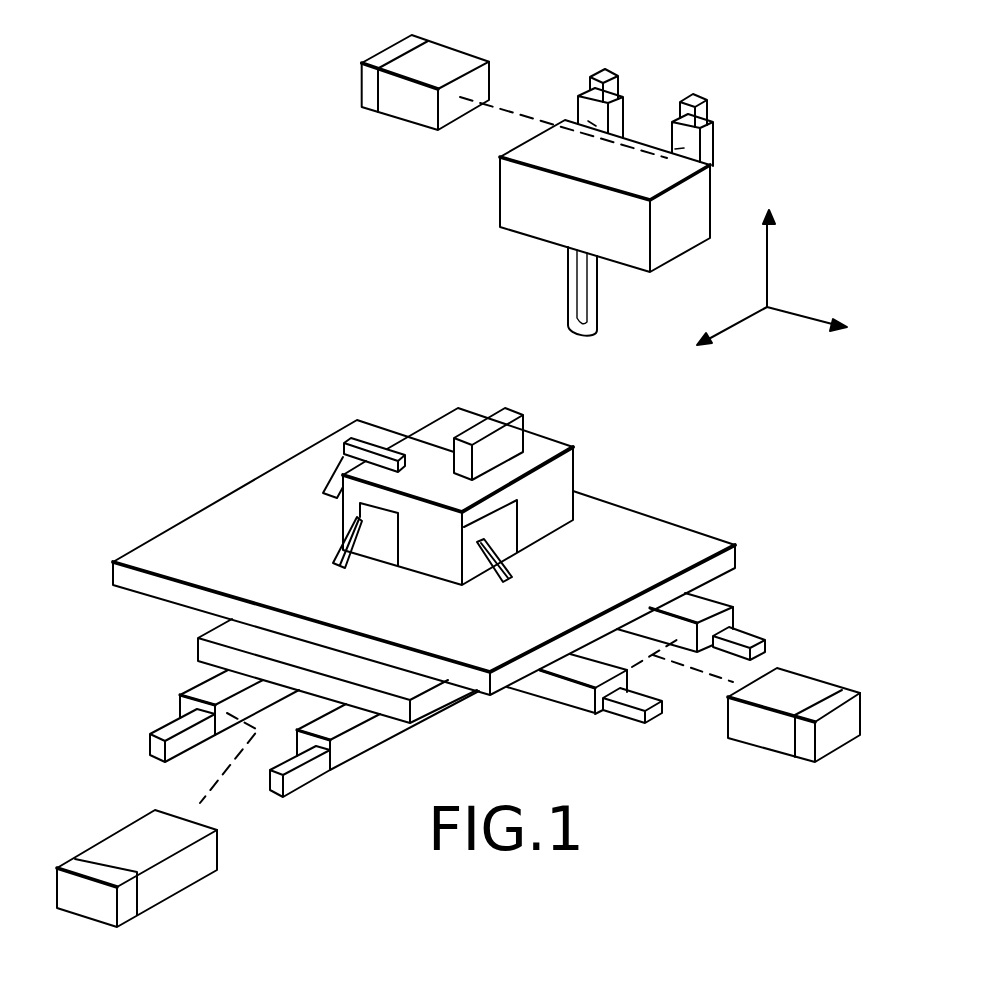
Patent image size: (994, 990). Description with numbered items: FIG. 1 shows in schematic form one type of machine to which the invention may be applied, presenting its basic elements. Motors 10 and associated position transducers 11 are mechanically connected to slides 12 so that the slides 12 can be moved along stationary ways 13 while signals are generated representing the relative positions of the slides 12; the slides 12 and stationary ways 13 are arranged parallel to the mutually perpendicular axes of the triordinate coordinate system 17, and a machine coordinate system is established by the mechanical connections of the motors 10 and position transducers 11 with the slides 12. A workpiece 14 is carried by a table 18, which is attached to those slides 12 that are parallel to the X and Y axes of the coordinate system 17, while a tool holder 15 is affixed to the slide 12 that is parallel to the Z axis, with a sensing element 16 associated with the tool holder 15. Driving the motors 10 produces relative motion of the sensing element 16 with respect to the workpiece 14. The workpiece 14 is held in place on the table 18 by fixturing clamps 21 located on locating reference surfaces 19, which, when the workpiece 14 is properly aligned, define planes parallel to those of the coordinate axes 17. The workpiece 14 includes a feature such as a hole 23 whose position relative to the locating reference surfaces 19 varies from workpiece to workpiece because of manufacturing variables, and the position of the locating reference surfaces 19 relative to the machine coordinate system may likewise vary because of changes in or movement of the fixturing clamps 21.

The motor 10 is at (410, 123).
The position transducer 11 is at (388, 48).
The slide 12 is at (623, 108).
The stationary way 13 is at (608, 68).
The workpiece 14 is at (573, 473).
The tool holder 15 is at (523, 230).
The sensing element 16 is at (565, 305).
The triordinate coordinate system 17 is at (797, 310).
The table 18 is at (698, 526).
The locating reference surface 19 is at (398, 452).
The fixturing clamp 21 is at (323, 495).
The hole 23 is at (517, 408).